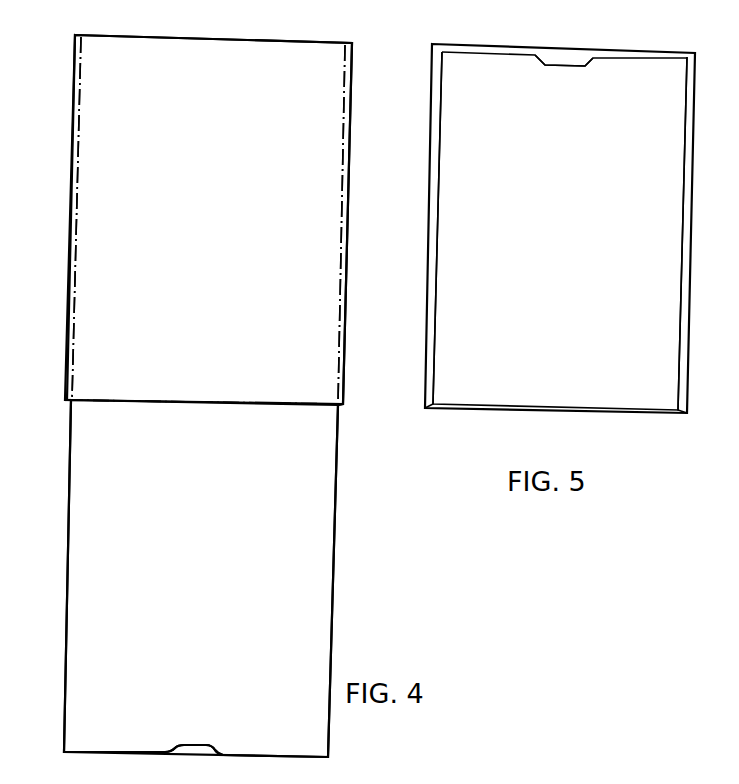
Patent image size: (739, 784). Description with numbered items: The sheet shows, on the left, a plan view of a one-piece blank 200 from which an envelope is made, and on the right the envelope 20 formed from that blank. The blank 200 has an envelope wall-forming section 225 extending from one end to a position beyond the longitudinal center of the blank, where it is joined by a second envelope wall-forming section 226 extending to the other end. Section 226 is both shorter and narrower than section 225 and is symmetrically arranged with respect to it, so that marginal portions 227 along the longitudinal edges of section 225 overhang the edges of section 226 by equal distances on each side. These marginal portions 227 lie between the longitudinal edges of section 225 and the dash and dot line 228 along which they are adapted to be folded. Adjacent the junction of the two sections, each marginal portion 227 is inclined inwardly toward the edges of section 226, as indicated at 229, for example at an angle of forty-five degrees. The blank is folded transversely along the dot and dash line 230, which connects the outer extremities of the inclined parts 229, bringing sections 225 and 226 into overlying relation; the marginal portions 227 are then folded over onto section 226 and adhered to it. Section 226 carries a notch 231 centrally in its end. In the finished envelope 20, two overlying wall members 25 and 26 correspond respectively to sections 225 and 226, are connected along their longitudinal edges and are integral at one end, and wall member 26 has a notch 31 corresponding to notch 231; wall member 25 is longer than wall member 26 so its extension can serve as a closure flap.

In FIG. 4, the one-piece blank 200 is at (211, 35).
In FIG. 4, the envelope wall-forming section 225 is at (221, 155).
In FIG. 4, the envelope wall-forming section 226 is at (217, 557).
In FIG. 4, the marginal portions 227 is at (73, 121).
In FIG. 4, the dash and dot line 228 is at (81, 74).
In FIG. 4, the inclined parts 229 is at (66, 401).
In FIG. 4, the fold line 230 is at (217, 402).
In FIG. 4, the notch 231 is at (203, 745).
In FIG. 5, the envelope 20 is at (505, 415).
In FIG. 5, the wall member 25 is at (625, 52).
In FIG. 5, the wall member 26 is at (570, 244).
In FIG. 5, the notch 31 is at (553, 67).